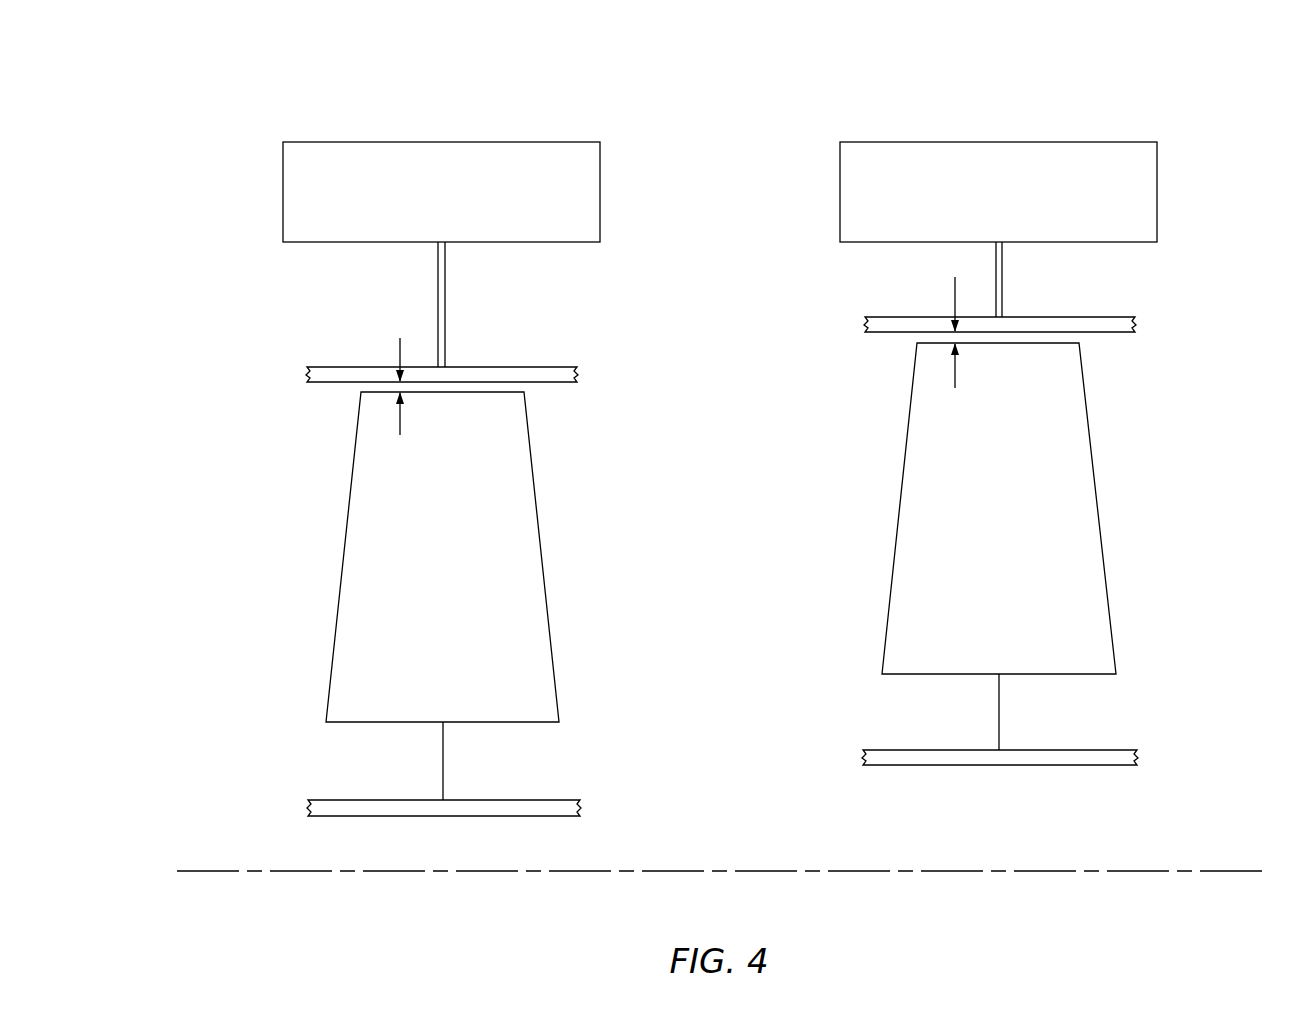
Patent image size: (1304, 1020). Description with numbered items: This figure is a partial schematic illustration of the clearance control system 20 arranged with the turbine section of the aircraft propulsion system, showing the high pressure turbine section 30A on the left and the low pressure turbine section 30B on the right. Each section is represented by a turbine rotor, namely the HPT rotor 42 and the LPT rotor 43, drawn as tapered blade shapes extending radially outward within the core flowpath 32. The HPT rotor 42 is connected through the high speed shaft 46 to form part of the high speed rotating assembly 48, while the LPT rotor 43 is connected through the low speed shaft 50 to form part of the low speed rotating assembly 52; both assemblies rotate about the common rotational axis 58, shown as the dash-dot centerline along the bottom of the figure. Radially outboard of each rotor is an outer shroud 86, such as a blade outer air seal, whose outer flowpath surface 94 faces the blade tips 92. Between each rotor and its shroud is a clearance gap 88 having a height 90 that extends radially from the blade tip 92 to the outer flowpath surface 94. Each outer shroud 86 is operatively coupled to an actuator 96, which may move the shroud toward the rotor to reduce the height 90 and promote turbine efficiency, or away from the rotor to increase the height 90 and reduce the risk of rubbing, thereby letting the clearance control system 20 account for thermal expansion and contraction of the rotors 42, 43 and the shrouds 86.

The clearance control system 20 is at (1212, 127).
The high pressure turbine section 30A is at (256, 309).
The low pressure turbine section 30B is at (1182, 261).
The core flowpath 32 is at (718, 532).
The HPT rotor 42 is at (574, 604).
The LPT rotor 43 is at (1123, 555).
The high speed shaft 46 is at (330, 818).
The high speed rotating assembly 48 is at (389, 789).
The low speed shaft 50 is at (886, 767).
The low speed rotating assembly 52 is at (1056, 757).
The rotational axis 58 is at (1248, 872).
The outer shroud 86 is at (578, 375).
The clearance gap 88 is at (356, 392).
The height 90 is at (398, 340).
The blade tip 92 is at (487, 392).
The outer flowpath surface 94 is at (460, 382).
The actuator 96 is at (427, 223).